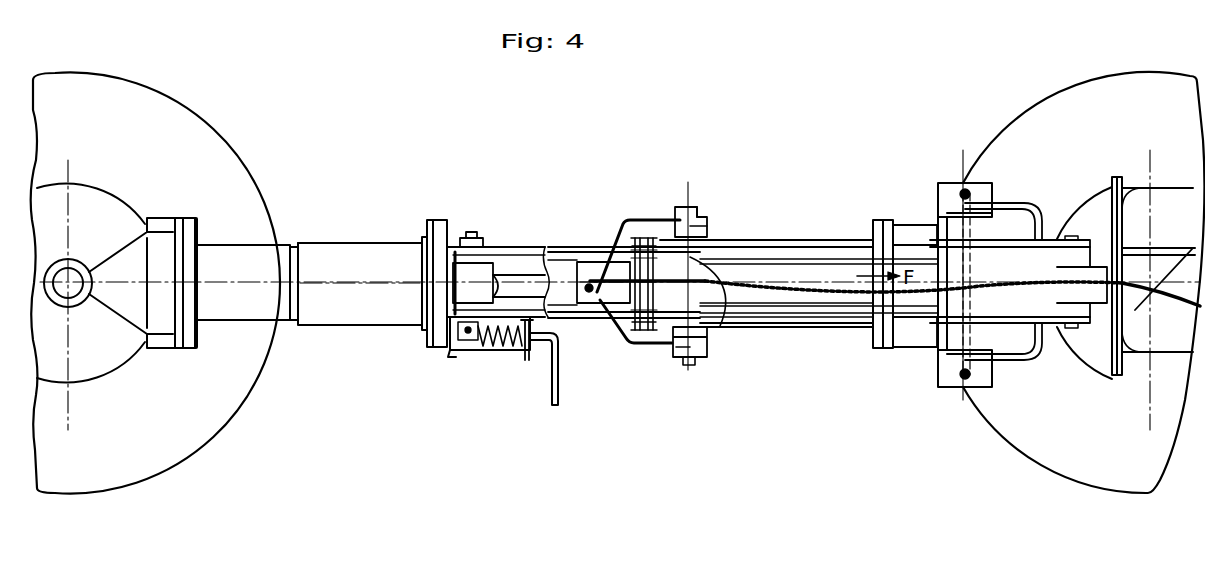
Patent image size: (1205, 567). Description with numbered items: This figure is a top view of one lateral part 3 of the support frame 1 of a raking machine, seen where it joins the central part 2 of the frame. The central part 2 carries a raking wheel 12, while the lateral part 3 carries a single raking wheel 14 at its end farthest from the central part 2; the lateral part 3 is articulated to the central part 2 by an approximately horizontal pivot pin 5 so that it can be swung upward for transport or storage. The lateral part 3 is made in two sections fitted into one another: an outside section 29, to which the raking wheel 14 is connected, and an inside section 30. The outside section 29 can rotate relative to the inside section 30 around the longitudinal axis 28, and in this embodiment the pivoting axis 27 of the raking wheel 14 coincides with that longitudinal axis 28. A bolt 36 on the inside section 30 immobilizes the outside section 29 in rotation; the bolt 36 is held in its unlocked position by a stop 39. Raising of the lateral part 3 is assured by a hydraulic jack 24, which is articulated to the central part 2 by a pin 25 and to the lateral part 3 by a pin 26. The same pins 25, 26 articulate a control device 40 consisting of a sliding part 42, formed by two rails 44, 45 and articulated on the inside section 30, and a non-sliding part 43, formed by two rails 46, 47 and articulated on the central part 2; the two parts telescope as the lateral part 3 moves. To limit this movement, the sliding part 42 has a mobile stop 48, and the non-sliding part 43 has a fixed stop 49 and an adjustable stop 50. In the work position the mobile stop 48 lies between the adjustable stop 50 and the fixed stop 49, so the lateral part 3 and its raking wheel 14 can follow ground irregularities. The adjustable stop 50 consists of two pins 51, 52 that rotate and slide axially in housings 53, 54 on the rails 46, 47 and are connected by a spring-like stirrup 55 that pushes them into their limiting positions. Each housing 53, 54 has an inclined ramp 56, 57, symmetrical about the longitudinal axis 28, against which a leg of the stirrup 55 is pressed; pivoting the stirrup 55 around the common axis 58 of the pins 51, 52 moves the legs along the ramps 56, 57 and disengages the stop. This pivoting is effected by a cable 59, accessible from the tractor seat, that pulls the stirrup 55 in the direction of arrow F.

The support frame 1 is at (318, 237).
The central part 2 is at (1166, 212).
The lateral part 3 is at (353, 247).
The pivot pin 5 is at (963, 188).
The raking wheel 12 is at (1051, 469).
The raking wheel 14 is at (108, 493).
The hydraulic jack 24 is at (935, 266).
The pin 25 is at (1075, 232).
The pin 26 is at (473, 238).
The pivoting axis 27 is at (377, 285).
The longitudinal axis 28 is at (240, 288).
The outside section 29 is at (397, 250).
The inside section 30 is at (523, 262).
The bolt 36 is at (556, 397).
The stop 39 is at (490, 341).
The control device 40 is at (825, 238).
The sliding part 42 is at (586, 318).
The non-sliding part 43 is at (835, 323).
The rail 44 is at (565, 250).
The rail 45 is at (566, 316).
The rail 46 is at (792, 240).
The rail 47 is at (849, 322).
The mobile stop 48 is at (650, 237).
The fixed stop 49 is at (640, 352).
The adjustable stop 50 is at (682, 298).
The pin 51 is at (678, 358).
The pin 52 is at (681, 210).
The housing 53 is at (708, 344).
The housing 54 is at (700, 230).
The stirrup 55 is at (621, 226).
The inclined ramp 56 is at (691, 360).
The inclined ramp 57 is at (700, 216).
The common axis 58 is at (690, 190).
The cable 59 is at (925, 296).